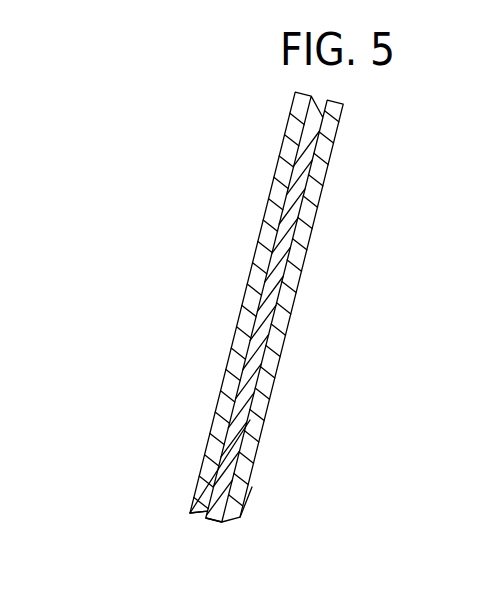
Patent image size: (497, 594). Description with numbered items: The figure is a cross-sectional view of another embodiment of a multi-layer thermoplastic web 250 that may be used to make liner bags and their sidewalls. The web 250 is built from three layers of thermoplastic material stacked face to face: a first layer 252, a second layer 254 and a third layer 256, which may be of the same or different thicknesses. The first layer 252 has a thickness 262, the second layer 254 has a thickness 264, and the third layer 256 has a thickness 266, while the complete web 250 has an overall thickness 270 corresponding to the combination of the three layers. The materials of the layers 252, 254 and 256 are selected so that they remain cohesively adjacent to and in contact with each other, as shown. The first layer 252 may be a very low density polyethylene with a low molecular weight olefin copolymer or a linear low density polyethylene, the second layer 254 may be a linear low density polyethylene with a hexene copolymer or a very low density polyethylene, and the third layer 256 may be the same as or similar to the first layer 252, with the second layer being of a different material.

The multi-layer thermoplastic web 250 is at (205, 158).
The first layer 252 is at (200, 475).
The second layer 254 is at (213, 519).
The third layer 256 is at (228, 522).
The thickness 262 is at (365, 231).
The thickness 264 is at (362, 275).
The thickness 266 is at (185, 270).
The thickness 270 is at (253, 487).